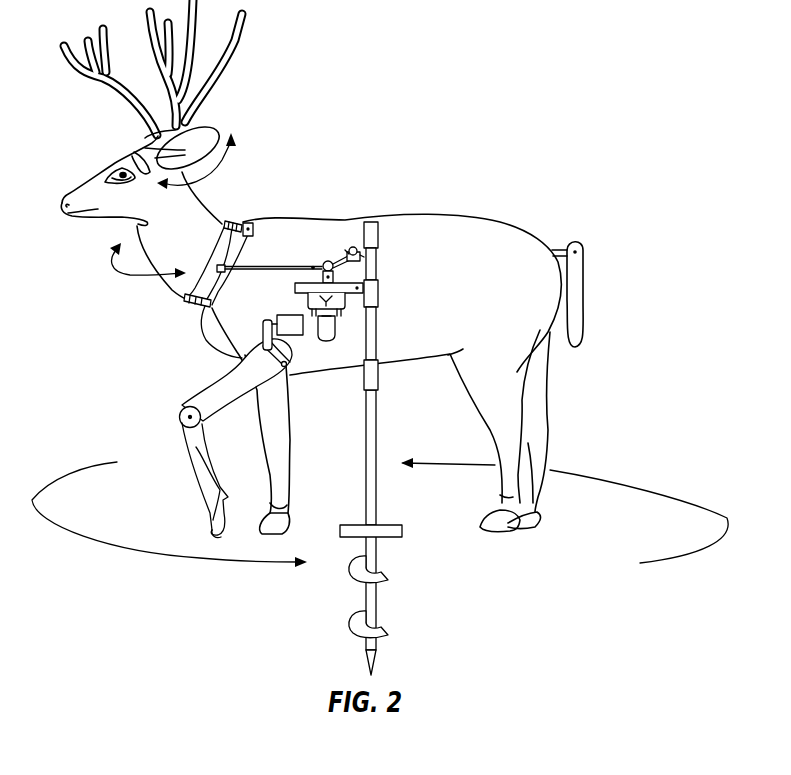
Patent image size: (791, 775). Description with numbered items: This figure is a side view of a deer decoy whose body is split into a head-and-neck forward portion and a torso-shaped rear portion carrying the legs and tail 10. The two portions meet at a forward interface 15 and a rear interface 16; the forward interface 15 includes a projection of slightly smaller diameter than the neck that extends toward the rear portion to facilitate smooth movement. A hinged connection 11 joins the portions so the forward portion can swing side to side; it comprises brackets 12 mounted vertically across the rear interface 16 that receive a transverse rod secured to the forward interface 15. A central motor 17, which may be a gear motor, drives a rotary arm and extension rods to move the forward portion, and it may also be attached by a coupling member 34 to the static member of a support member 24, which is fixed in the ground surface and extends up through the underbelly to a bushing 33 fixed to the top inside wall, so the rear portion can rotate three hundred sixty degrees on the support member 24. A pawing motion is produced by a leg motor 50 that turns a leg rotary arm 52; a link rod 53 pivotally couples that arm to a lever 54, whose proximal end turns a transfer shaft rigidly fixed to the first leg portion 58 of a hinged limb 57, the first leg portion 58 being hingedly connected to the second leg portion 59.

The tail 10 is at (575, 240).
The hinged connection 11 is at (256, 216).
The brackets 12 is at (247, 210).
The forward interface 15 is at (217, 236).
The rear interface 16 is at (209, 334).
The central motor 17 is at (326, 342).
The support member 24 is at (387, 408).
The bushing 33 is at (372, 230).
The coupling member 34 is at (295, 287).
The leg motor 50 is at (296, 337).
The leg rotary arm 52 is at (277, 318).
The link rod 53 is at (240, 358).
The lever 54 is at (197, 394).
The hinged limb 57 is at (169, 427).
The first leg portion 58 is at (229, 412).
The second leg portion 59 is at (200, 490).